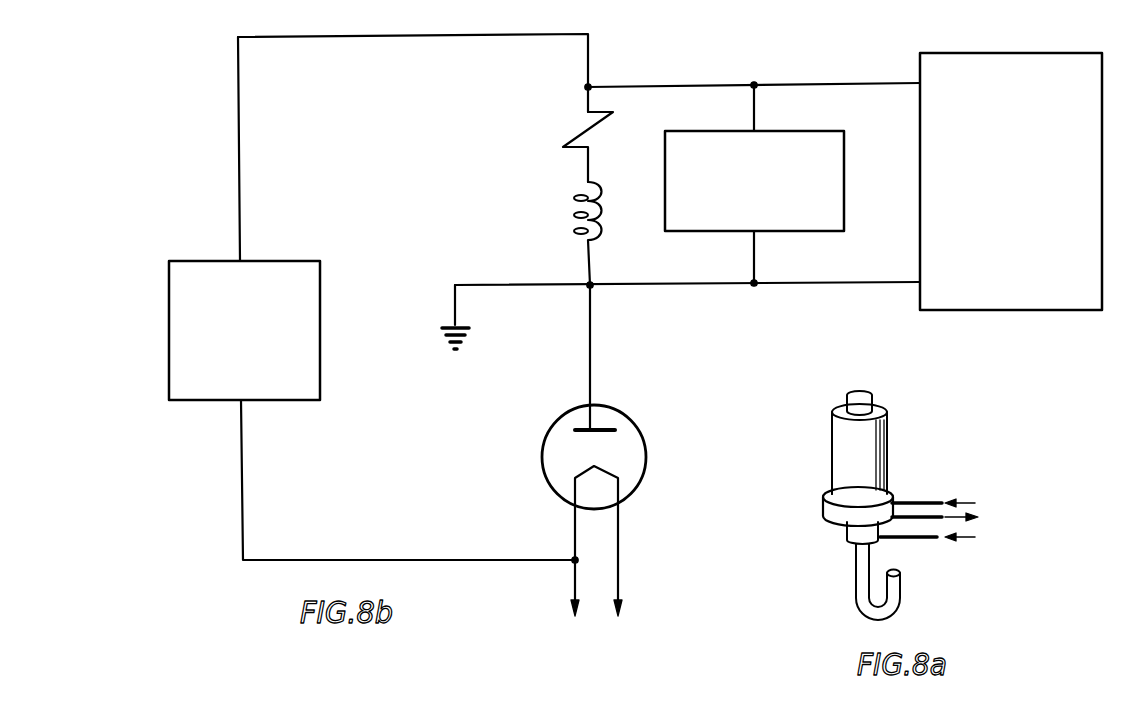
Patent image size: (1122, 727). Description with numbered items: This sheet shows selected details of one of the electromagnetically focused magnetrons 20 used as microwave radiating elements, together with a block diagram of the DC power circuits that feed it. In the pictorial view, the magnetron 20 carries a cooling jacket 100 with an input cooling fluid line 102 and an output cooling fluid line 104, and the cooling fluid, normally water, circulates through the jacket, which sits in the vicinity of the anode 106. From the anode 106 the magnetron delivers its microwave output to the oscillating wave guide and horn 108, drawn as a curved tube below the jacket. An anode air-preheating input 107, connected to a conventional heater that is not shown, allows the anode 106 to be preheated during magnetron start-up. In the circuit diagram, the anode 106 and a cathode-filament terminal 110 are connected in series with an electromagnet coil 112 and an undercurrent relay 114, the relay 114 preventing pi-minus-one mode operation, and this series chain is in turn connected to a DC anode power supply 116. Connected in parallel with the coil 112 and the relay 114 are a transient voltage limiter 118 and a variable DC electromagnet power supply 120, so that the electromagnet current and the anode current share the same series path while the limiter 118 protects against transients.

In FIG. 8A, the magnetron 20 is at (891, 437).
In FIG. 8A, the cooling jacket 100 is at (824, 512).
In FIG. 8A, the input cooling fluid line 102 is at (906, 500).
In FIG. 8A, the output cooling fluid line 104 is at (920, 512).
In FIG. 8B, the anode 106 is at (600, 430).
In FIG. 8A, the anode 106 is at (832, 476).
In FIG. 8A, the anode air-preheating input 107 is at (922, 539).
In FIG. 8A, the oscillating wave guide and horn 108 is at (856, 575).
In FIG. 8B, the cathode-filament terminal 110 is at (574, 557).
In FIG. 8B, the electromagnet coil 112 is at (578, 216).
In FIG. 8B, the undercurrent relay 114 is at (576, 132).
In FIG. 8B, the DC anode power supply 116 is at (320, 380).
In FIG. 8B, the transient voltage limiter 118 is at (820, 130).
In FIG. 8B, the variable DC electromagnet power supply 120 is at (921, 169).